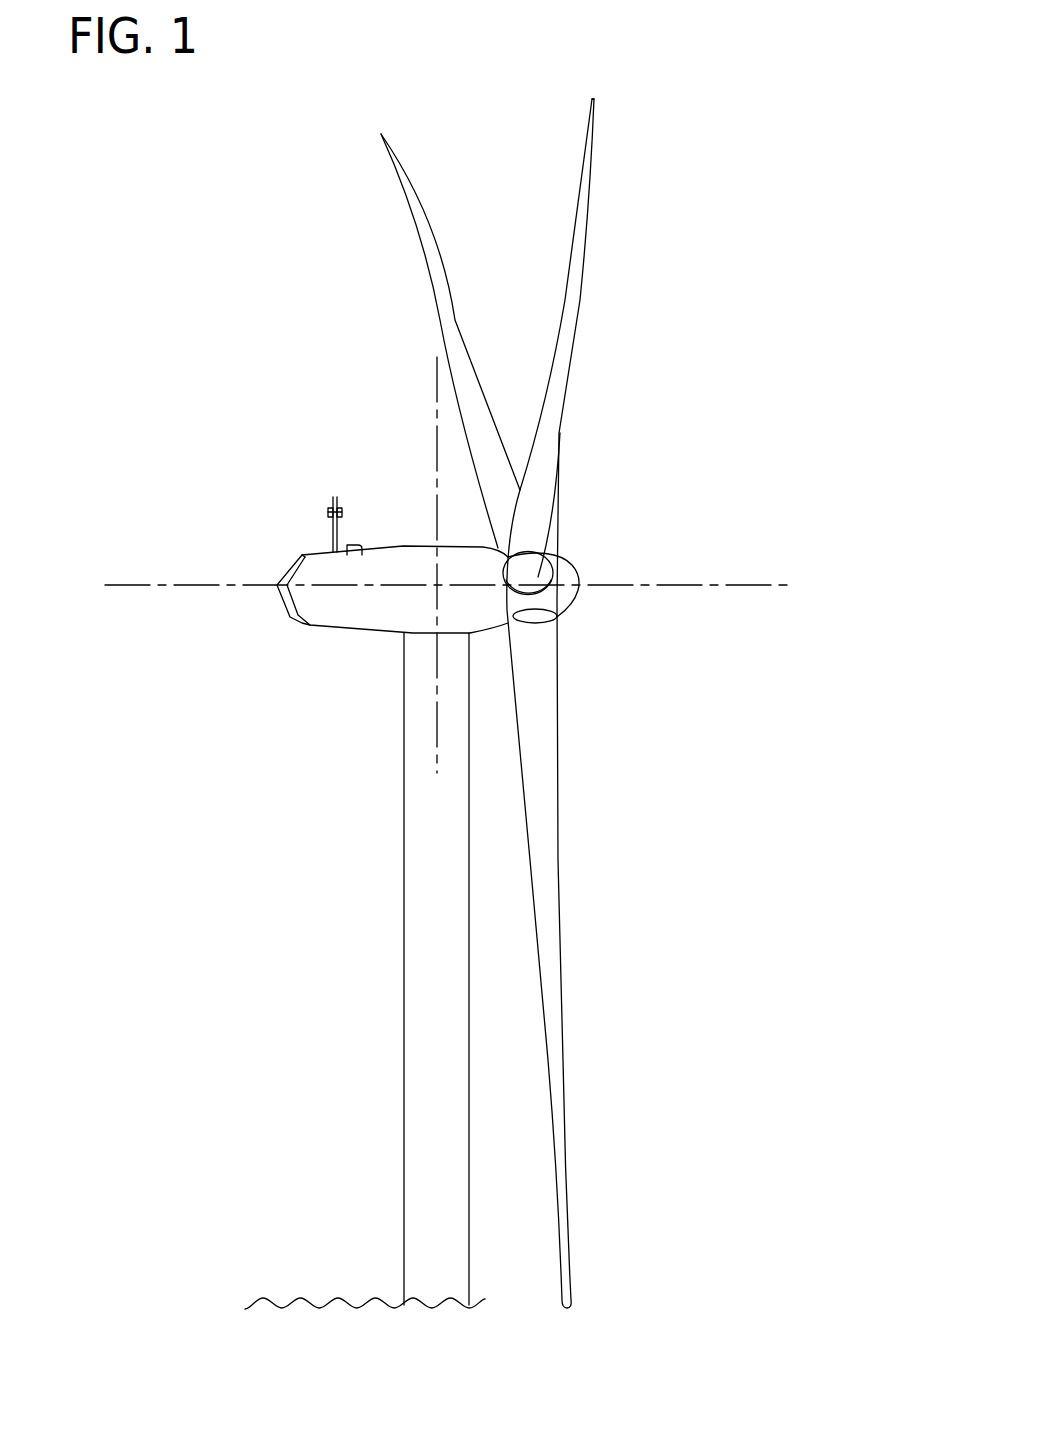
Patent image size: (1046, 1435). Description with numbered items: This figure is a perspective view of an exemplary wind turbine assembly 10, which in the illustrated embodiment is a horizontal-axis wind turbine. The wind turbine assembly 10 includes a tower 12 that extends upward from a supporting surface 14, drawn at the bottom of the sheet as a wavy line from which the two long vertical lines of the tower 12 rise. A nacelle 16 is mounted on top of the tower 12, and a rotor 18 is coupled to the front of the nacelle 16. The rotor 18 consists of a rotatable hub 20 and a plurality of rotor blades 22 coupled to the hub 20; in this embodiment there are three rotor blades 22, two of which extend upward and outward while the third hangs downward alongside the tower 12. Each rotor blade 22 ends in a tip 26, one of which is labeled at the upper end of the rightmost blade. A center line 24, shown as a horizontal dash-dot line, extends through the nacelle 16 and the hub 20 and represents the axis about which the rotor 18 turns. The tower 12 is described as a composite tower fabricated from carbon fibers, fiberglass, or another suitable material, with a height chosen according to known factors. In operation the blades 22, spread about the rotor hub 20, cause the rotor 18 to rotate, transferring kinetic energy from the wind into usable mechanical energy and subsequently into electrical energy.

The wind turbine assembly 10 is at (225, 287).
The tower 12 is at (403, 917).
The supporting surface 14 is at (300, 1298).
The nacelle 16 is at (325, 638).
The rotor 18 is at (572, 628).
The rotatable hub 20 is at (577, 600).
The rotor blades 22 is at (420, 222).
The center line 24 is at (763, 587).
The tip 26 is at (593, 98).